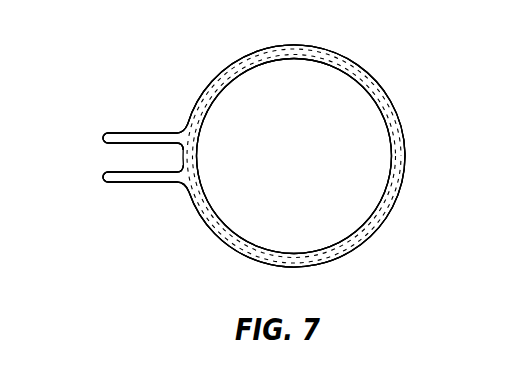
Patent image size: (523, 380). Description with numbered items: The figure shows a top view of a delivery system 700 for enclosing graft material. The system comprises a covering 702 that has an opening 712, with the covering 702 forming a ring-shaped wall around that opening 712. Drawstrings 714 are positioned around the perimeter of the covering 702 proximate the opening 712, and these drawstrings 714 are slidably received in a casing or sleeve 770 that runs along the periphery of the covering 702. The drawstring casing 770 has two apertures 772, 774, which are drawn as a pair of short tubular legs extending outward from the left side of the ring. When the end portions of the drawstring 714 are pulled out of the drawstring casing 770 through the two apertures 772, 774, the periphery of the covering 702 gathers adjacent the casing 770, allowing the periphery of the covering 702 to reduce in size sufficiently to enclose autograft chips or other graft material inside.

The ring-shaped device 700 is at (110, 24).
The covering 702 is at (322, 47).
The opening 712 is at (322, 128).
The drawstrings 714 is at (106, 191).
The casing or sleeve 770 is at (358, 245).
The aperture 772 is at (184, 189).
The aperture 774 is at (184, 127).